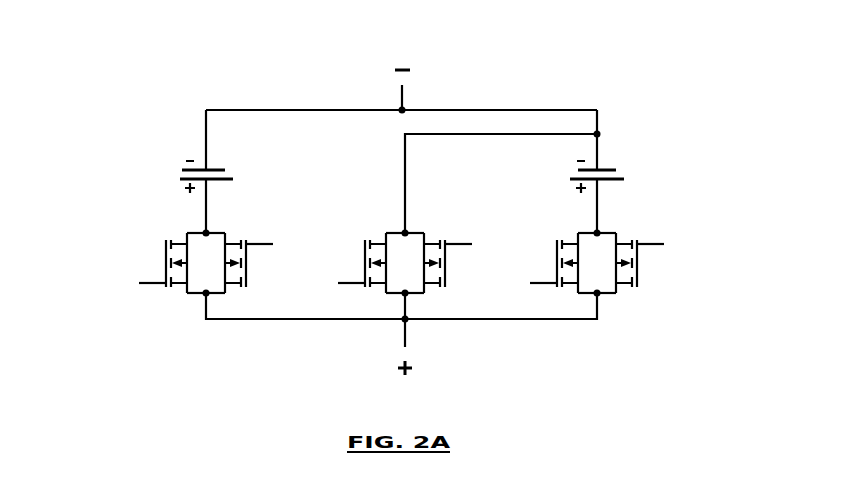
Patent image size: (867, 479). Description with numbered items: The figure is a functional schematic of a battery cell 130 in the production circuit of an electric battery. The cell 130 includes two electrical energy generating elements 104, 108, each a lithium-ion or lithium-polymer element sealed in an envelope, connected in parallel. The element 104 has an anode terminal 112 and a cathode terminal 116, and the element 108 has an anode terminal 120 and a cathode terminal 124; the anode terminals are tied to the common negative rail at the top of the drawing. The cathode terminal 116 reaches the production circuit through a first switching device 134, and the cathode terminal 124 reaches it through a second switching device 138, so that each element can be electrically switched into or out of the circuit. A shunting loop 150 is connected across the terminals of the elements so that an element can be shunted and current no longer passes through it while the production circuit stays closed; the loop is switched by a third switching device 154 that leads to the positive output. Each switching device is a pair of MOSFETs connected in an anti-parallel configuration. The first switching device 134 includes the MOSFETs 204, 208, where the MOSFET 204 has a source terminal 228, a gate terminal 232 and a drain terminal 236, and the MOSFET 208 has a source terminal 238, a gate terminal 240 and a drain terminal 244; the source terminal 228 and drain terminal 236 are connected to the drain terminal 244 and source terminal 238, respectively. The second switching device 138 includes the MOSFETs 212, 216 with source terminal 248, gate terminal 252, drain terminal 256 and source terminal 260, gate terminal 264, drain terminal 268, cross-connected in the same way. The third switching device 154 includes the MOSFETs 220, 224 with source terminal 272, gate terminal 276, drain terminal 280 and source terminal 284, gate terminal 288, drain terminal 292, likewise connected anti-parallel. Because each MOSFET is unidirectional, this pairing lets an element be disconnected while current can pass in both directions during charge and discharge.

The cell 130 is at (114, 53).
The electrical energy generating element 104 is at (154, 170).
The electrical energy generating element 108 is at (647, 166).
The anode terminal 112 is at (206, 155).
The cathode terminal 116 is at (206, 197).
The anode terminal 120 is at (597, 157).
The cathode terminal 124 is at (597, 190).
The first switching device 134 is at (202, 319).
The second switching device 138 is at (605, 322).
The shunting loop 150 is at (483, 134).
The third switching device 154 is at (425, 318).
The MOSFET 204 is at (123, 263).
The MOSFET 208 is at (274, 214).
The MOSFET 212 is at (560, 214).
The MOSFET 216 is at (670, 276).
The MOSFET 220 is at (371, 214).
The MOSFET 224 is at (452, 220).
The source terminal 228 is at (187, 290).
The gate terminal 232 is at (140, 283).
The drain terminal 236 is at (189, 233).
The source terminal 238 is at (222, 233).
The gate terminal 240 is at (273, 244).
The drain terminal 244 is at (226, 293).
The source terminal 248 is at (578, 293).
The gate terminal 252 is at (531, 283).
The drain terminal 256 is at (578, 233).
The source terminal 260 is at (616, 236).
The gate terminal 264 is at (653, 246).
The drain terminal 268 is at (616, 293).
The source terminal 272 is at (386, 293).
The gate terminal 276 is at (339, 283).
The drain terminal 280 is at (386, 233).
The source terminal 284 is at (424, 232).
The gate terminal 288 is at (472, 244).
The drain terminal 292 is at (424, 293).